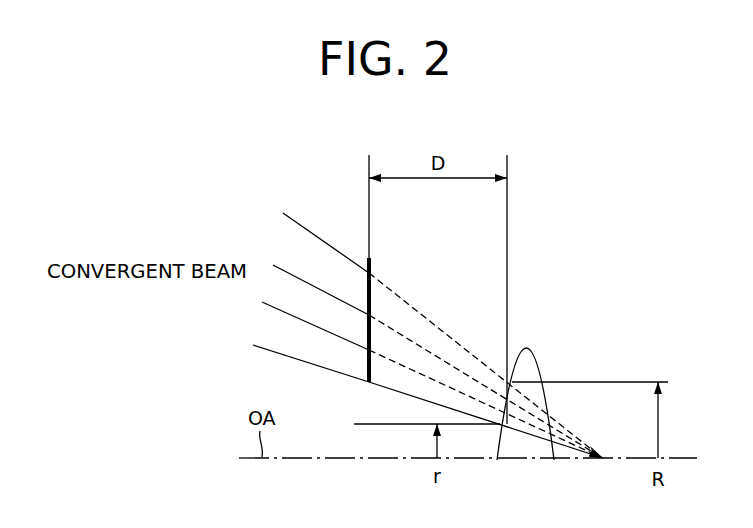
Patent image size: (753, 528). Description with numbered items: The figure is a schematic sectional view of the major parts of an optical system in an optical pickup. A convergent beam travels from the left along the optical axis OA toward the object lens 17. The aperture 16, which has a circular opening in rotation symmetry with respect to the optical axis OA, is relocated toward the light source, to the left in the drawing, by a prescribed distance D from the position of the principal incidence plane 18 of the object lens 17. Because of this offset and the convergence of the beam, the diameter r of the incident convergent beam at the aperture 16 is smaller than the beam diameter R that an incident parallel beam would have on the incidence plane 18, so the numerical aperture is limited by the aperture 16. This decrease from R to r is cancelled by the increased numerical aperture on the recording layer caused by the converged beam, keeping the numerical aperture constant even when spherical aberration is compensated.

The aperture 16 is at (372, 265).
The object lens 17 is at (547, 368).
The principal incidence plane 18 is at (509, 265).